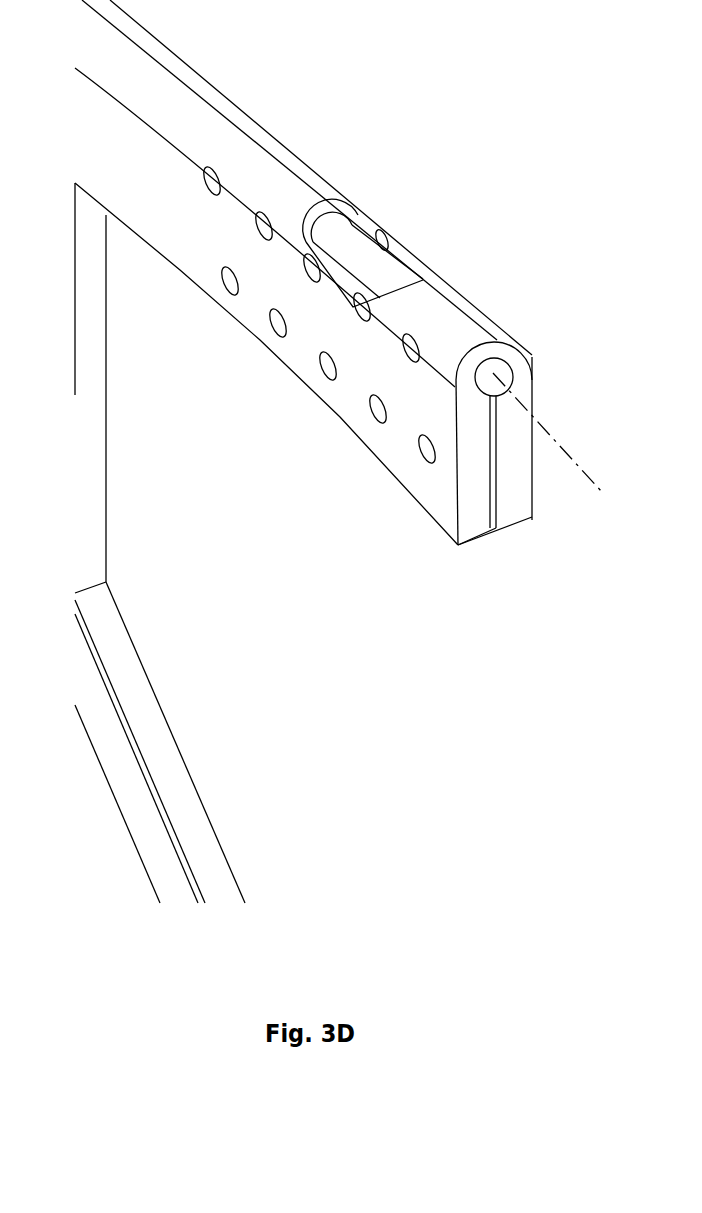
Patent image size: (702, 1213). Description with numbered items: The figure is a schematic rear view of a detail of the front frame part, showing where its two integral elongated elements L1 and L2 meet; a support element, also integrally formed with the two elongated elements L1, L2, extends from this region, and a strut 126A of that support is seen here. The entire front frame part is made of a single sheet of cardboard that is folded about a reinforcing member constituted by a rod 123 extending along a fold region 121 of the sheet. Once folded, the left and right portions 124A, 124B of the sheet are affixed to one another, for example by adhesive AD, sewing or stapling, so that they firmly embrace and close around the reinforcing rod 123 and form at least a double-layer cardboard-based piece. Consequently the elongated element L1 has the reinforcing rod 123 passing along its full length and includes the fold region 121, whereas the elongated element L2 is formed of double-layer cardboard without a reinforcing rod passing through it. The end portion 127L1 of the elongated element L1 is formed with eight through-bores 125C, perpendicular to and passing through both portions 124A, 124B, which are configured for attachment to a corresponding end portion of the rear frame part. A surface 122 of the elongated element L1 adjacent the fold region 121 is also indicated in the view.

The elongated element L1 is at (117, 147).
The elongated element L2 is at (155, 818).
The fold region 121 is at (468, 322).
The leg surface 122 is at (428, 310).
The reinforcing rod 123 is at (350, 237).
The left portion of cardboard sheet 124A is at (518, 518).
The right portion of cardboard sheet 124B is at (472, 527).
The through-bores 125C is at (262, 223).
The strut 126A is at (97, 450).
The end portion 127L1 is at (403, 477).
The adhesive AD is at (495, 483).